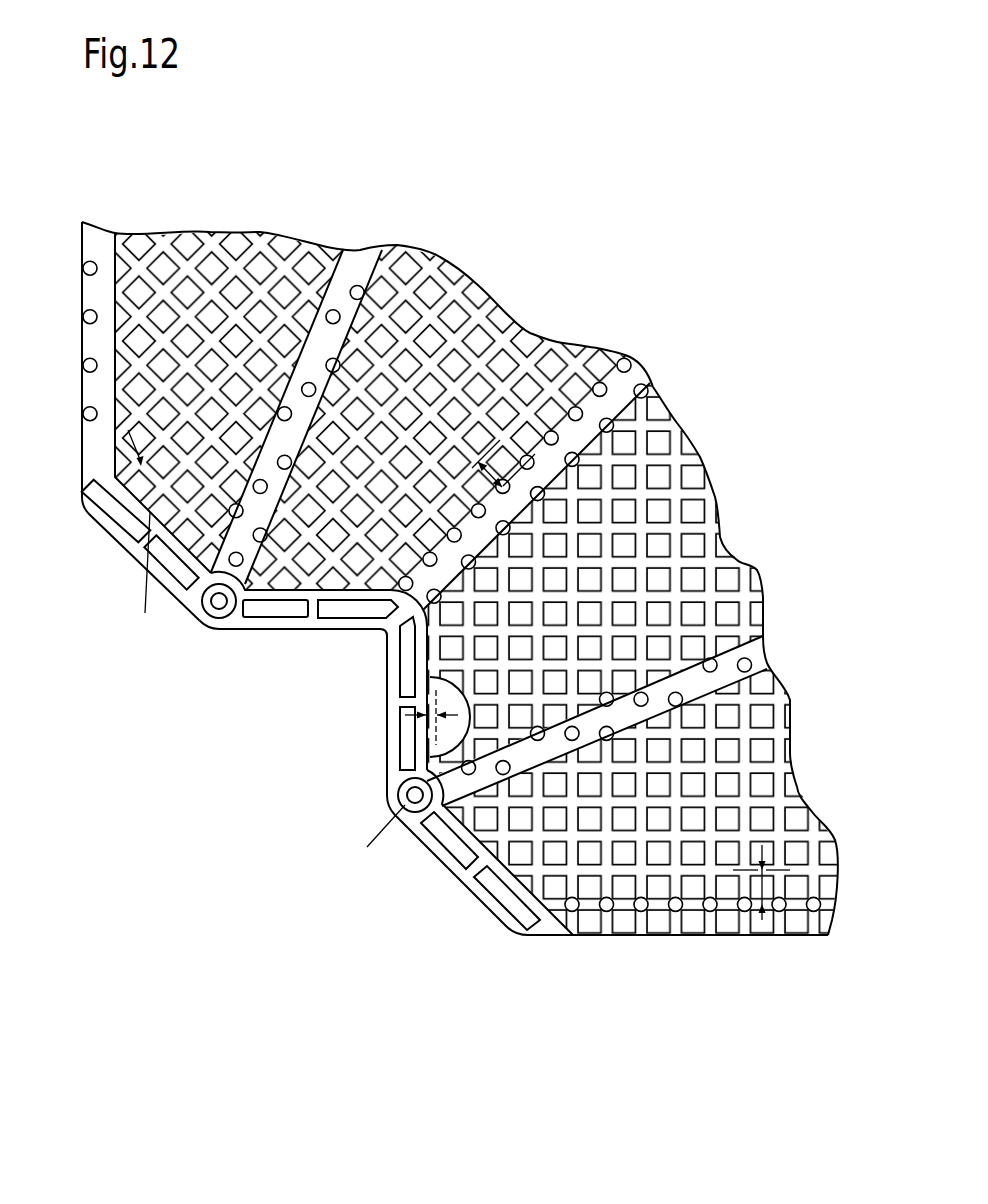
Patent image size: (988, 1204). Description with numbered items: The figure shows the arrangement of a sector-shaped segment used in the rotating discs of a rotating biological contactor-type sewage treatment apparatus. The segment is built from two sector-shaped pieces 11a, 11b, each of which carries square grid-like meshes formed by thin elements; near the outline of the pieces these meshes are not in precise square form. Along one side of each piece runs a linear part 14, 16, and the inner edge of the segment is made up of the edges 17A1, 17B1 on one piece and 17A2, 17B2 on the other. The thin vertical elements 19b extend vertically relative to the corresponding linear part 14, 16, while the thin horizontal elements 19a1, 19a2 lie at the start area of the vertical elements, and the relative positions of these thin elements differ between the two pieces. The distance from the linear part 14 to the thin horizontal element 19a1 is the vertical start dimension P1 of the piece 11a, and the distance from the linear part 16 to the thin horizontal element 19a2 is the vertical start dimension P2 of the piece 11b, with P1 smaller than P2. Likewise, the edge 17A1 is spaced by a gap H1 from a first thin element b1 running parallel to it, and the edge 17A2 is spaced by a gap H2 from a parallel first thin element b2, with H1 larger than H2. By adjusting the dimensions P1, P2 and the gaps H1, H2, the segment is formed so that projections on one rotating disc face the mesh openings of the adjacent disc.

The sector-shaped piece 11a is at (404, 230).
The sector-shaped piece 11b is at (745, 518).
The linear part 14 is at (633, 362).
The linear part 16 is at (722, 922).
The edge 17A1 is at (102, 523).
The edge 17A2 is at (392, 677).
The edge 17B1 is at (267, 622).
The edge 17B2 is at (470, 885).
The thin horizontal element 19a1 is at (550, 365).
The thin horizontal element 19a2 is at (798, 862).
The thin vertical element 19b is at (276, 254).
The vertical start dimension P1 is at (519, 445).
The vertical start dimension P2 is at (785, 888).
The gap H1 is at (145, 588).
The gap H2 is at (410, 718).
The first thin element b1 is at (128, 430).
The first thin element b2 is at (375, 848).